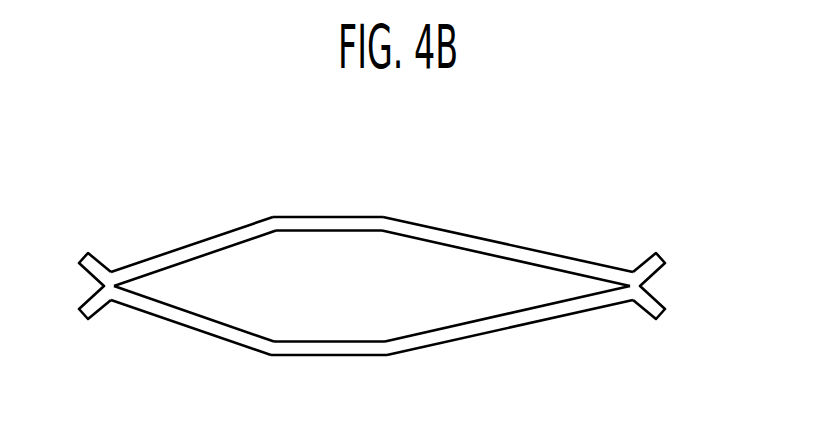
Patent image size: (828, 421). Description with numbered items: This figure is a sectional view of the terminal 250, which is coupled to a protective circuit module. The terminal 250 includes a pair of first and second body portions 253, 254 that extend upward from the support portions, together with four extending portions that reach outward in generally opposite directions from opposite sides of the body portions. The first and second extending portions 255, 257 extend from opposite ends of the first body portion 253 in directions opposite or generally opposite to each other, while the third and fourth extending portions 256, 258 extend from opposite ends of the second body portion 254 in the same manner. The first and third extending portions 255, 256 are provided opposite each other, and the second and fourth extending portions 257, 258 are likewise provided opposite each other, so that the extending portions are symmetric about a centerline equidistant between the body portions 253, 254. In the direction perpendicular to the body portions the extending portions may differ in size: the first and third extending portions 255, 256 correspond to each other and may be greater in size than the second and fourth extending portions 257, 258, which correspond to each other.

The terminal 250 is at (632, 156).
The first body portion 253 is at (357, 356).
The second body portion 254 is at (357, 216).
The first extending portion 255 is at (493, 323).
The third extending portion 256 is at (492, 245).
The second extending portion 257 is at (207, 328).
The fourth extending portion 258 is at (207, 245).